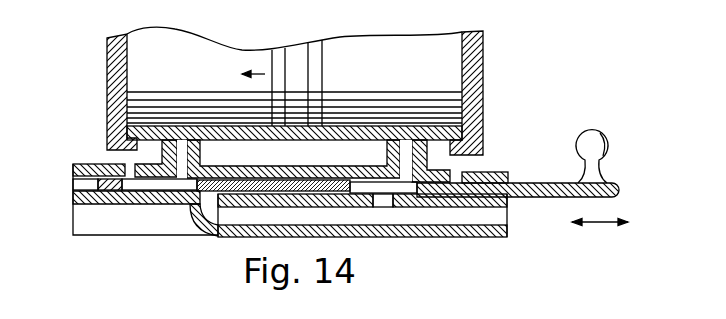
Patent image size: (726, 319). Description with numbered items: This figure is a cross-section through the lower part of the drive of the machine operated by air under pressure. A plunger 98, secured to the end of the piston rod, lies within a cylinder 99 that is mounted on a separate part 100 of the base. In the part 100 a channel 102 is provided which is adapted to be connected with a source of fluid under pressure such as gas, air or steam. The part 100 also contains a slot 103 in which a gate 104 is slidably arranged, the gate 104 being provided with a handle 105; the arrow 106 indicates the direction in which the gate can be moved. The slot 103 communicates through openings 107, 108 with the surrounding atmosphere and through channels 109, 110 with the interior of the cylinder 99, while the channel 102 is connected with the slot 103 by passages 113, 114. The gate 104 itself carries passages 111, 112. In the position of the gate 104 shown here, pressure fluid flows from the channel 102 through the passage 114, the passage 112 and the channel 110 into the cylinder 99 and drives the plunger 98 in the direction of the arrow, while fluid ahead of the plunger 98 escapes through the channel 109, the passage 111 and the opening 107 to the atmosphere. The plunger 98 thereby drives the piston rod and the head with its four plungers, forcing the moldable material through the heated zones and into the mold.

The plunger 98 is at (315, 52).
The cylinder 99 is at (455, 60).
The separate part of the base 100 is at (148, 223).
The channel 102 is at (478, 218).
The slot 103 is at (93, 184).
The gate 104 is at (318, 188).
The handle 105 is at (590, 138).
The direction of movement 106 is at (602, 224).
The opening 107 is at (130, 163).
The opening 108 is at (462, 171).
The channel 109 is at (182, 137).
The channel 110 is at (407, 135).
The passage 111 is at (155, 184).
The passage 112 is at (383, 187).
The passage 113 is at (212, 195).
The passage 114 is at (393, 200).